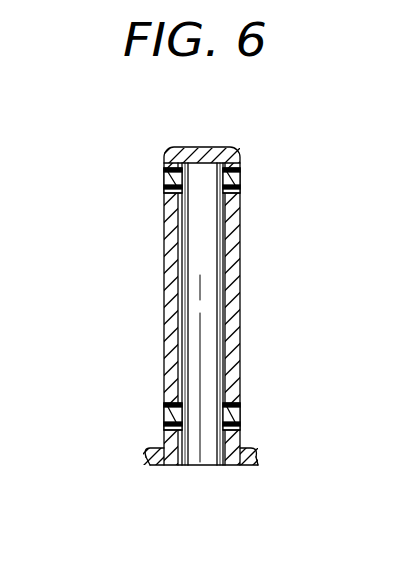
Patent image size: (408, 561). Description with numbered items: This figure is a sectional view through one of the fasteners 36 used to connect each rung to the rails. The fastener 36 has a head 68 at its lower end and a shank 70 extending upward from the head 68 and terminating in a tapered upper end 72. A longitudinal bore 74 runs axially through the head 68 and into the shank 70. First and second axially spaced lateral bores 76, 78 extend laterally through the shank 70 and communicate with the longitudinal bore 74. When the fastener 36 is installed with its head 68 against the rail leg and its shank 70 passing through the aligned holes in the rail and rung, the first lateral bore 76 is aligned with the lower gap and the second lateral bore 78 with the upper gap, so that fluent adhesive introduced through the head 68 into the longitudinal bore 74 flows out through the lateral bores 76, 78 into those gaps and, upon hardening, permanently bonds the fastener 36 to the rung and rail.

The fastener 36 is at (167, 260).
The head 68 is at (152, 463).
The shank 70 is at (167, 330).
The tapered upper end 72 is at (167, 158).
The longitudinal bore 74 is at (212, 462).
The first lateral bore 76 is at (170, 412).
The second lateral bore 78 is at (170, 182).